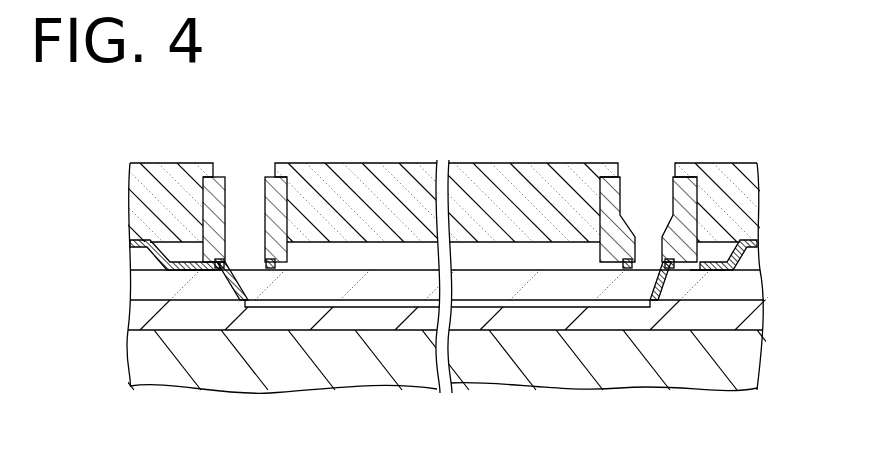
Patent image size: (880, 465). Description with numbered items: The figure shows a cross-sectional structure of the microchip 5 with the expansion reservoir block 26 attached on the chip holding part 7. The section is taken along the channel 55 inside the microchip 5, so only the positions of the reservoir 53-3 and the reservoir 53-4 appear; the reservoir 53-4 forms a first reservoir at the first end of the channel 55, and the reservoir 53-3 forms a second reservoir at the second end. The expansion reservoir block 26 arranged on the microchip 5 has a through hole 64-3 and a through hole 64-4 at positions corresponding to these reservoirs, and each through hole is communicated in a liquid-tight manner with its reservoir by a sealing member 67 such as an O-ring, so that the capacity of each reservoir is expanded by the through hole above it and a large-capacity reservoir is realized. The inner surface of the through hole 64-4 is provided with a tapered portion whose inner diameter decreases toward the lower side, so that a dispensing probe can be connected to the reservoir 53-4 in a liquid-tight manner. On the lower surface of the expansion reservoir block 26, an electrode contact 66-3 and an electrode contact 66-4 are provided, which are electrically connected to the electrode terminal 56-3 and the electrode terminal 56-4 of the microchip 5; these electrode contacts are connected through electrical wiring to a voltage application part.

The expansion reservoir block 26 is at (772, 213).
The microchip 5 is at (774, 290).
The chip holding part 7 is at (766, 363).
The channel 55 is at (492, 308).
The through hole 64-3 is at (243, 210).
The through hole 64-4 is at (658, 200).
The sealing member 67 is at (272, 259).
The electrode contact 66-3 is at (172, 267).
The electrode contact 66-4 is at (745, 259).
The reservoir 53-3 is at (256, 303).
The reservoir 53-4 is at (648, 295).
The electrode terminal 56-3 is at (197, 272).
The electrode terminal 56-4 is at (700, 272).